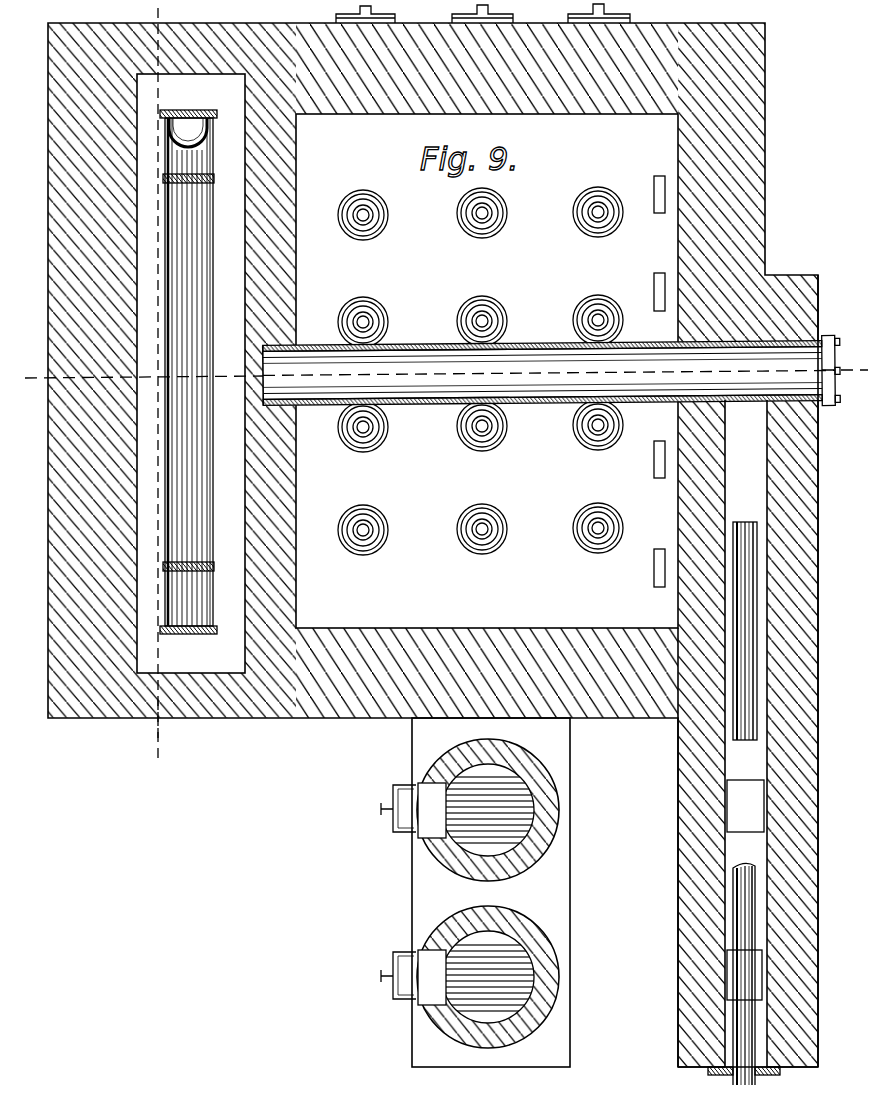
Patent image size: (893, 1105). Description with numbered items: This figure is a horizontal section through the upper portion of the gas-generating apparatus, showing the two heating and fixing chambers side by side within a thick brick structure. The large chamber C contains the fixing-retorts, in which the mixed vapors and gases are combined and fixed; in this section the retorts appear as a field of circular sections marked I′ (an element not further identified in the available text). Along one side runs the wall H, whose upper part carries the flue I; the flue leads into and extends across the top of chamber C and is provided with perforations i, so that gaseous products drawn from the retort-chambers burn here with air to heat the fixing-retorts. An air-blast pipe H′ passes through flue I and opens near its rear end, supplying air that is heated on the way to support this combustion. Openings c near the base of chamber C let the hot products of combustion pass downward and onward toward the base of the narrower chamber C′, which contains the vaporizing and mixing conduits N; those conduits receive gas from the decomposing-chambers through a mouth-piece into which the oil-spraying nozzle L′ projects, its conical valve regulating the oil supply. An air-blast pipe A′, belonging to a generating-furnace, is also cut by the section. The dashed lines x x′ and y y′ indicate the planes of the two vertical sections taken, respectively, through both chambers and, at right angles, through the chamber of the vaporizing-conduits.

The chamber containing the fixing-retorts C is at (433, 545).
The chamber containing the vaporizing-conduits C' is at (191, 373).
The vaporizing and mixing conduits N is at (199, 388).
The rollers I' is at (480, 371).
The perforations i is at (412, 345).
The oil-spraying nozzle L' is at (552, 372).
The openings c is at (654, 194).
The wall H is at (748, 671).
The air-blast pipe H' is at (781, 811).
The flue I is at (745, 821).
The air-blast pipe A' is at (475, 892).
The section line x x is at (144, 371).
The section line x' is at (845, 359).
The section line y y is at (149, 370).
The section line y' is at (150, 730).